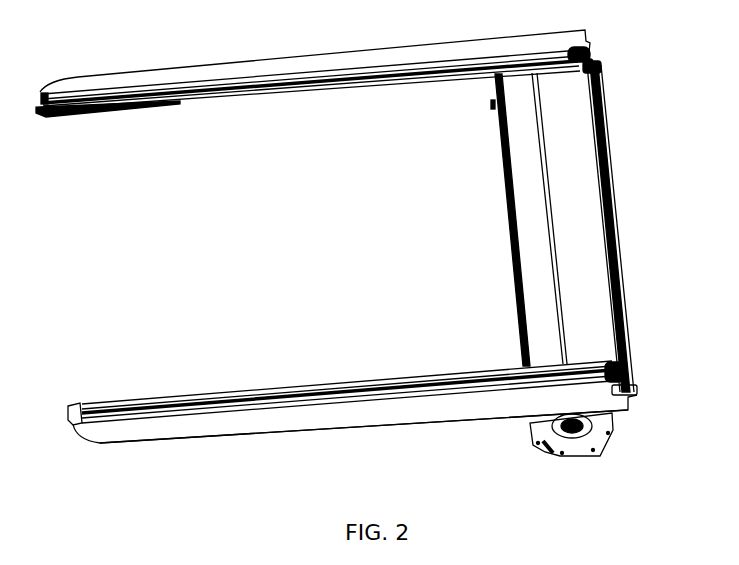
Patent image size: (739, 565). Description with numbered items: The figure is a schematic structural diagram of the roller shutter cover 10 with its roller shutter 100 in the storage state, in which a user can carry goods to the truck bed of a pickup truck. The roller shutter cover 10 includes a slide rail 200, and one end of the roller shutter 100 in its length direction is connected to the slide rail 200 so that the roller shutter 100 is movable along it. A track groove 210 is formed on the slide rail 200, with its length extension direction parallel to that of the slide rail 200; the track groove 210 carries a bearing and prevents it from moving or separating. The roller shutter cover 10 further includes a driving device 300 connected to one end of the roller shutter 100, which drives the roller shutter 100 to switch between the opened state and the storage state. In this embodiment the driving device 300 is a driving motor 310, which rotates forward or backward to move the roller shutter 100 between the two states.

The roller shutter cover 10 is at (287, 38).
The slide rail 200 is at (80, 76).
The track groove 210 is at (216, 96).
The roller shutter 100 is at (535, 270).
The driving device 300 is at (571, 434).
The driving motor 310 is at (614, 450).